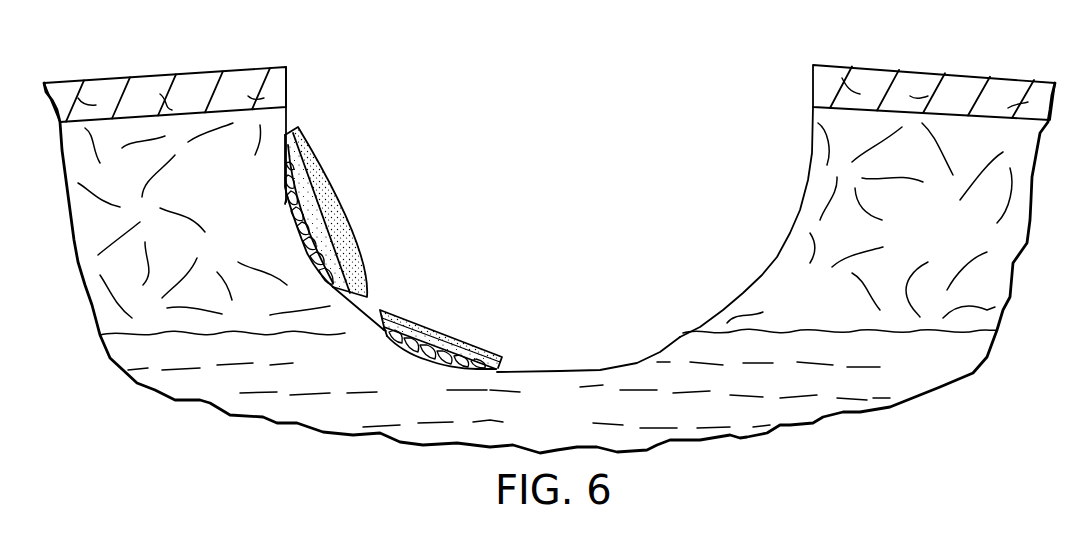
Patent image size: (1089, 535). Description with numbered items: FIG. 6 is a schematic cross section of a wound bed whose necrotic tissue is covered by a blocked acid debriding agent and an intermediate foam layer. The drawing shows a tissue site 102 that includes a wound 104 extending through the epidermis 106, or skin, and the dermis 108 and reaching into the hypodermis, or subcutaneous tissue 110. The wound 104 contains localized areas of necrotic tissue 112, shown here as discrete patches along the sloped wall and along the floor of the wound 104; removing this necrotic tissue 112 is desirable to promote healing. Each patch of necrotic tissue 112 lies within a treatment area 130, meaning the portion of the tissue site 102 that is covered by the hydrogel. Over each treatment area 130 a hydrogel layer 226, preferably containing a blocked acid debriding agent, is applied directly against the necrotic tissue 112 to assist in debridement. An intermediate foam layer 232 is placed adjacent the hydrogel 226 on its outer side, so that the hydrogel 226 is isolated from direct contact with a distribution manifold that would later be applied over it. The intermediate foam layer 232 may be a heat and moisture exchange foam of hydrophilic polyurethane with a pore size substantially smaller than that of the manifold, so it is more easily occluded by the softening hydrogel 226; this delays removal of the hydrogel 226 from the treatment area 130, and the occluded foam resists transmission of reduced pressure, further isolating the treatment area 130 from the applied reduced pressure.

The tissue site 102 is at (757, 271).
The wound 104 is at (810, 153).
The epidermis 106 is at (1011, 82).
The dermis 108 is at (950, 237).
The subcutaneous tissue 110 is at (571, 422).
The necrotic tissue 112 is at (298, 218).
The treatment area 130 is at (276, 195).
The hydrogel layer 226 is at (327, 243).
The intermediate foam layer 232 is at (313, 148).